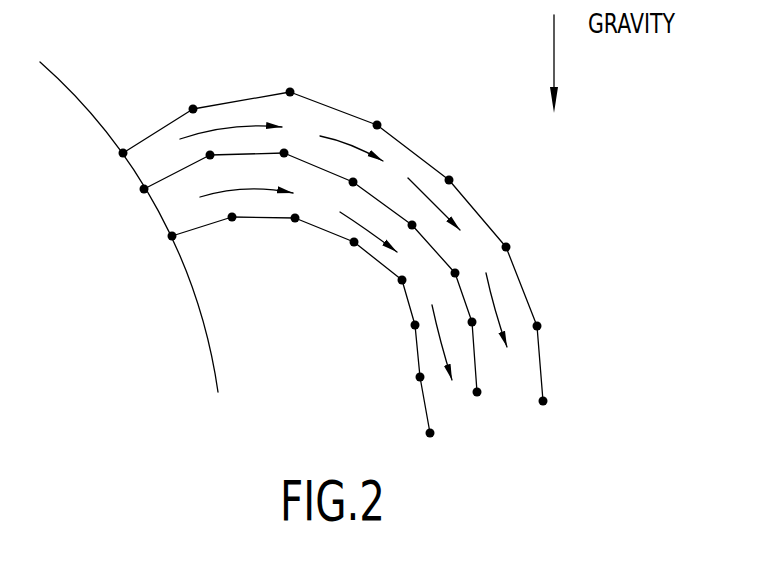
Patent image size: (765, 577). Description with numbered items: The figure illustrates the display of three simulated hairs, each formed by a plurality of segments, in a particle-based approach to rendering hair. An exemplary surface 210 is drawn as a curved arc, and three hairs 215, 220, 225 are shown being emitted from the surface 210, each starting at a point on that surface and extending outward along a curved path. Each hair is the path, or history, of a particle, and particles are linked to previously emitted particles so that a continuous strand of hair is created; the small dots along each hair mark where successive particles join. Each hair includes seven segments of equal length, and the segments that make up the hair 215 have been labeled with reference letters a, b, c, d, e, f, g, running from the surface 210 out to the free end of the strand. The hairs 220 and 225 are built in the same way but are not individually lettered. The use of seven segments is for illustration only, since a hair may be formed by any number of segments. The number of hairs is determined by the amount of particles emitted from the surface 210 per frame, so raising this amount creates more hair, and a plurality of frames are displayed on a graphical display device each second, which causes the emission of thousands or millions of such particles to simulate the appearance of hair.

The surface 210 is at (215, 370).
The hair 215 is at (323, 224).
The hair 220 is at (144, 189).
The hair 225 is at (172, 236).
The segment a is at (156, 128).
The segment b is at (235, 98).
The segment c is at (340, 108).
The segment d is at (422, 158).
The segment e is at (478, 213).
The segment f is at (525, 290).
The segment g is at (541, 368).